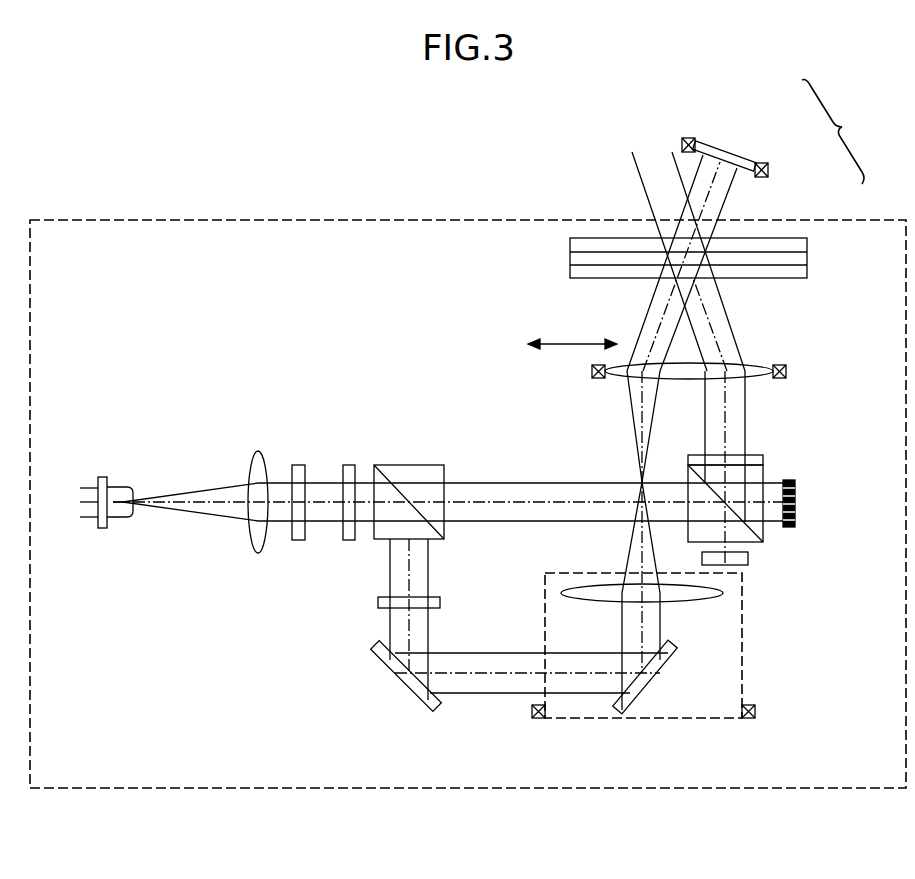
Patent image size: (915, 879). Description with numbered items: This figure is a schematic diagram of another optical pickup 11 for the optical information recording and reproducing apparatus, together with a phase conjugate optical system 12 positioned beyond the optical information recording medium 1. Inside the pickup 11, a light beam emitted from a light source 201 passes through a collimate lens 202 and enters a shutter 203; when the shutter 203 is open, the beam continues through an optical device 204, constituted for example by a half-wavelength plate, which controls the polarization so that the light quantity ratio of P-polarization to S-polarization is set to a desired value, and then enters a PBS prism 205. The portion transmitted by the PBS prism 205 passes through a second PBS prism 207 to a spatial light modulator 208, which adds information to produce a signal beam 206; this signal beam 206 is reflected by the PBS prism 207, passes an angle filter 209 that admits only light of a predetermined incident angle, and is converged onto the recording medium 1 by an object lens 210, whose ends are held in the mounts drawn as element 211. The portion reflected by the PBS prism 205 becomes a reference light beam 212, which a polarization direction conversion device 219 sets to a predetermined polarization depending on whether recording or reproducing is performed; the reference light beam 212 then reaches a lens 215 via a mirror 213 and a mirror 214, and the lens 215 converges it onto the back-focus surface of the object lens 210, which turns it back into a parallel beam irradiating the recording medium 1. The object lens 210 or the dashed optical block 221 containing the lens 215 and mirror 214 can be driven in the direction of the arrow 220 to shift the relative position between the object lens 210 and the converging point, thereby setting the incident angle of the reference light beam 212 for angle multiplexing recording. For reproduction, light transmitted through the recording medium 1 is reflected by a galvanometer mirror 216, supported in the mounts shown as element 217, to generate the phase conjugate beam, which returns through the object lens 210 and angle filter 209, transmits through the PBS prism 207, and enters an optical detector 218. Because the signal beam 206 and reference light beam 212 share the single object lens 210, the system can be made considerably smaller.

The optical information recording medium 1 is at (570, 265).
The optical pickup 11 is at (212, 219).
The phase conjugate optical system 12 is at (837, 132).
The light source 201 is at (118, 487).
The collimate lens 202 is at (252, 462).
The shutter 203 is at (296, 465).
The optical device 204 is at (350, 465).
The PBS prism 205 is at (414, 465).
The signal beam 206 is at (490, 483).
The PBS prism 207 is at (765, 475).
The spatial light modulator 208 is at (800, 500).
The angle filter 209 is at (752, 456).
The object lens 210 is at (748, 365).
The lens holder 211 is at (786, 372).
The reference light beam 212 is at (480, 653).
The mirror 213 is at (397, 680).
The mirror 214 is at (650, 688).
The lens 215 is at (683, 601).
The galvanometer mirror 216 is at (738, 162).
The mirror holder 217 is at (768, 170).
The optical detector 218 is at (748, 559).
The polarization direction conversion device 219 is at (378, 603).
The arrow 220 is at (556, 346).
The optical block 221 is at (578, 720).